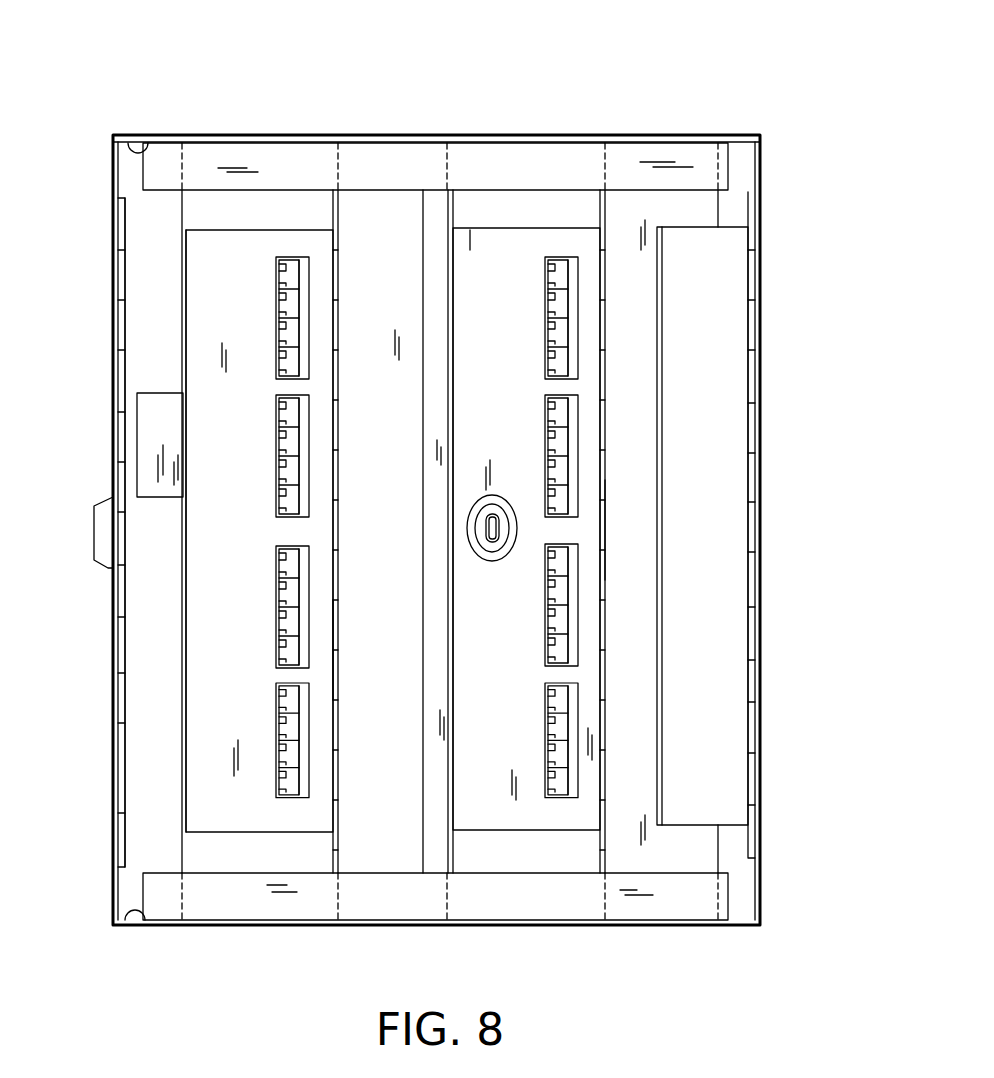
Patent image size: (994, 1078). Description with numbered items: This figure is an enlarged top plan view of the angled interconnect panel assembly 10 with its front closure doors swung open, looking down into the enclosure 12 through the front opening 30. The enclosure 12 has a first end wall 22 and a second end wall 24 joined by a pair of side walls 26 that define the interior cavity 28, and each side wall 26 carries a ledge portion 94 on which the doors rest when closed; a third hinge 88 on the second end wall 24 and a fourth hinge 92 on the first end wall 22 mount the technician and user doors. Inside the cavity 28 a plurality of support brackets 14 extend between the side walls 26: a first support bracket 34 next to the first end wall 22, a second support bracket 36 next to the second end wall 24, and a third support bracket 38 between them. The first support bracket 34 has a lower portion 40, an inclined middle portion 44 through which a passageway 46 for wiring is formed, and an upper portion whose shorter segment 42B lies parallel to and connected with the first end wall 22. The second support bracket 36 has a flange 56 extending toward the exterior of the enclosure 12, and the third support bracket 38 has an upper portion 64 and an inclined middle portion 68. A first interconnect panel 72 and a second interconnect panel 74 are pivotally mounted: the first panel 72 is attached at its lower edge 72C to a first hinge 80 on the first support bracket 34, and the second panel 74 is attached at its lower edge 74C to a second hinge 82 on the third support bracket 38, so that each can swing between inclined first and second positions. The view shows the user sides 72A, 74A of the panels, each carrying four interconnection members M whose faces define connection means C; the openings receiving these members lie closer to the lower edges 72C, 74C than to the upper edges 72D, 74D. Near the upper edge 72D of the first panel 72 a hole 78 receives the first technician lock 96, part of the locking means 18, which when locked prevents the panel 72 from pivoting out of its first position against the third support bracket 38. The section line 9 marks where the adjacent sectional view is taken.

The angled interconnect panel assembly 10 is at (212, 98).
The enclosure 12 is at (382, 132).
The support brackets 14 is at (262, 854).
The locking means 18 is at (102, 573).
The first opposite end wall 22 is at (760, 905).
The second opposite end wall 24 is at (118, 905).
The opposite side walls 26 is at (297, 140).
The interior cavity 28 is at (525, 210).
The front opening 30 is at (150, 152).
The first support bracket 34 is at (672, 852).
The second support bracket 36 is at (213, 854).
The third support bracket 38 is at (405, 854).
The lower portion 40 is at (607, 850).
The shorter segment 42B is at (733, 191).
The inclined middle portion 44 is at (650, 400).
The passageway 46 is at (690, 661).
The flange 56 is at (143, 440).
The upper portion 64 is at (432, 778).
The inclined middle portion 68 is at (370, 831).
The first interconnect panel 72 is at (478, 810).
The user side 72A is at (485, 296).
The lower edge 72C is at (580, 235).
The upper edge 72D is at (455, 395).
The second interconnect panel 74 is at (180, 738).
The user side 74A is at (218, 296).
The lower edge 74C is at (328, 253).
The upper edge 74D is at (183, 690).
The hole 78 is at (470, 530).
The first hinge 80 is at (607, 535).
The second hinge 82 is at (336, 655).
The third hinge 88 is at (120, 340).
The fourth hinge 92 is at (752, 688).
The ledge portion 94 is at (250, 153).
The first technician lock 96 is at (476, 505).
The interconnection members M is at (302, 327).
The connection means C is at (276, 356).
The section line 9- 9 is at (58, 492).